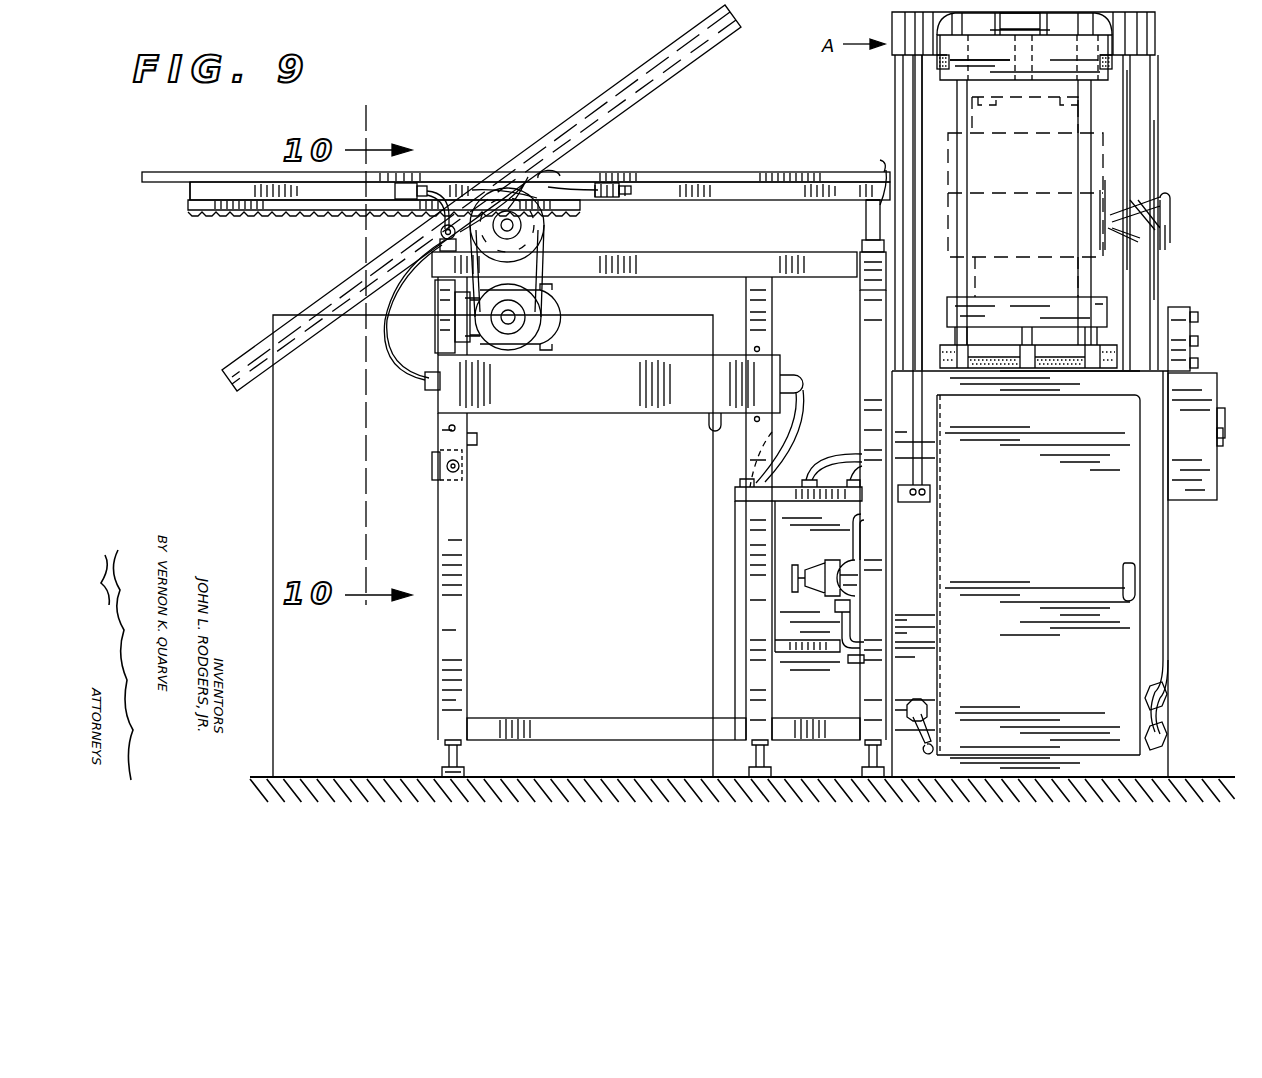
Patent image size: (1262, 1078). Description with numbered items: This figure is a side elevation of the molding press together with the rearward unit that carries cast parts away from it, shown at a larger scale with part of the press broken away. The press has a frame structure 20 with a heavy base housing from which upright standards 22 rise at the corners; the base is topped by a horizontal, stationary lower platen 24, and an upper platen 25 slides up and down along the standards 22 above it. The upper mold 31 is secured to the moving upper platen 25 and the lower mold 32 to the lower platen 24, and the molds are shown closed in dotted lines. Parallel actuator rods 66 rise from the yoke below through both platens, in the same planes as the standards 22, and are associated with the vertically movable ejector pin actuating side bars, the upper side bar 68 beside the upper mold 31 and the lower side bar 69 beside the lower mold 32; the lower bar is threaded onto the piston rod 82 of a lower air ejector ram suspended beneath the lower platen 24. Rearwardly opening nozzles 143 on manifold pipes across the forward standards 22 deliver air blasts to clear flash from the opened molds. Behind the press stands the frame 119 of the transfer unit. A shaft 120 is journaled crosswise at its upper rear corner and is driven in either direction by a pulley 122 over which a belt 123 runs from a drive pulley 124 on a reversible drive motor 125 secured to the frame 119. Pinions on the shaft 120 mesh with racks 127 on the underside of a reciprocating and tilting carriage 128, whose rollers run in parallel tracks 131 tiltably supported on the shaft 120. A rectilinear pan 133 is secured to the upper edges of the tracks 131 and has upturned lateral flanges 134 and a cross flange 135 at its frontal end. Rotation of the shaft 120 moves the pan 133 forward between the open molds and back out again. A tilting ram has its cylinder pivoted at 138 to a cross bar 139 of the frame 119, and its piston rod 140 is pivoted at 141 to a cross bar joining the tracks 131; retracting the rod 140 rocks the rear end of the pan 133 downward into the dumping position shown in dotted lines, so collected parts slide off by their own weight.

The frame structure 20 is at (1150, 572).
The standards 22 is at (895, 110).
The lower platen 24 is at (1072, 371).
The upper platen 25 is at (1062, 50).
The upper mold 31 is at (1104, 156).
The lower mold 32 is at (1108, 202).
The actuator rods 66 is at (1085, 159).
The upper side bar 68 is at (960, 67).
The lower side bar 69 is at (1034, 302).
The piston rod 82 is at (1022, 318).
The frame 119 is at (488, 702).
The shaft 120 is at (507, 185).
The pulley 122 is at (541, 176).
The belt 123 is at (546, 258).
The drive pulley 124 is at (531, 315).
The reversible drive motor 125 is at (556, 328).
The racks 127 is at (252, 222).
The carriage 128 is at (183, 202).
The tracks 131 is at (772, 194).
The pan 133 is at (682, 67).
The lateral flanges 134 is at (755, 158).
The cross flange 135 is at (886, 162).
The pivot 138 is at (463, 466).
The cross bar 139 is at (430, 466).
The piston rod 140 is at (438, 277).
The pivot 141 is at (440, 225).
The nozzles 143 is at (1154, 198).